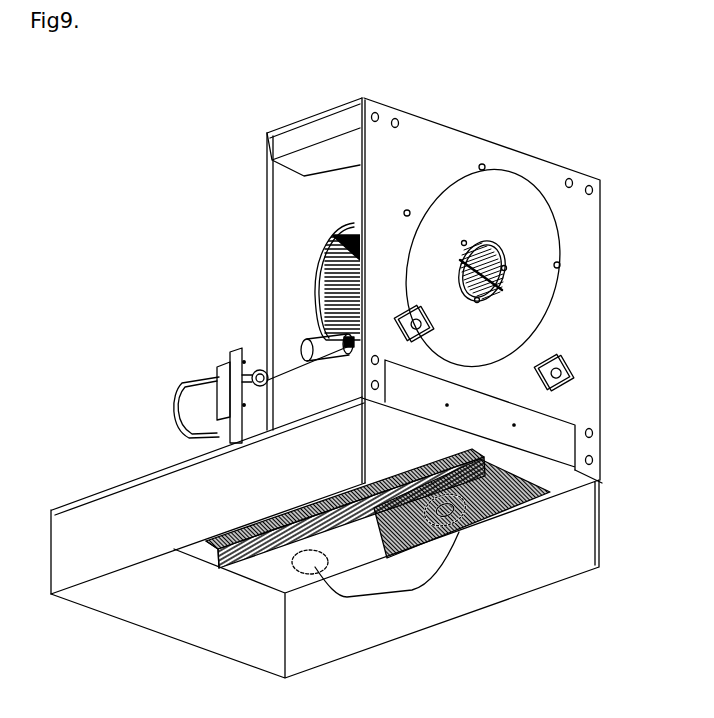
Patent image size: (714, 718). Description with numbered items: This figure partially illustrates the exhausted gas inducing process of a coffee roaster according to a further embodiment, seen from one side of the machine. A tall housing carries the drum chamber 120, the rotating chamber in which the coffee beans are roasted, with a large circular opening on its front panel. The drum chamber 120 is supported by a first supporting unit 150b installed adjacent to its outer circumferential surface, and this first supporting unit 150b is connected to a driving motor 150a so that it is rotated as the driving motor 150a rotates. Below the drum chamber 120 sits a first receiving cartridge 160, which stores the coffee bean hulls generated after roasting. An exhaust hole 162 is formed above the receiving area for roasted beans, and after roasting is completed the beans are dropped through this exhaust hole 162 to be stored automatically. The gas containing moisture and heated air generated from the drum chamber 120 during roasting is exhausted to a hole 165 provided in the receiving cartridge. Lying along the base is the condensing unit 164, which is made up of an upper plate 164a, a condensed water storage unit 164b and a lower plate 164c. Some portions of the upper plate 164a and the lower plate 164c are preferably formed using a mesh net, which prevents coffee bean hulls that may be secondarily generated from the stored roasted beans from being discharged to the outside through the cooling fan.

The drum chamber 120 is at (313, 271).
The driving motor 150a is at (190, 410).
The first supporting unit 150b is at (300, 340).
The first receiving cartridge 160 is at (563, 442).
The exhaust hole 162 is at (466, 530).
The condensing unit 164 is at (260, 574).
The upper plate 164a is at (198, 547).
The condensed water storage unit 164b is at (203, 556).
The lower plate 164c is at (208, 564).
The hole 165 is at (302, 567).